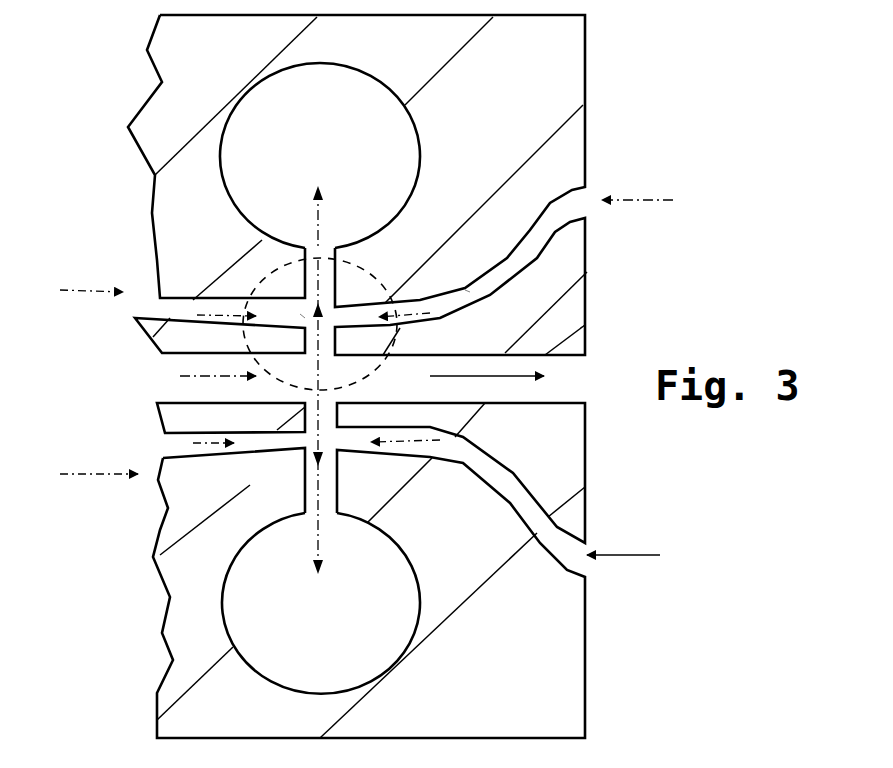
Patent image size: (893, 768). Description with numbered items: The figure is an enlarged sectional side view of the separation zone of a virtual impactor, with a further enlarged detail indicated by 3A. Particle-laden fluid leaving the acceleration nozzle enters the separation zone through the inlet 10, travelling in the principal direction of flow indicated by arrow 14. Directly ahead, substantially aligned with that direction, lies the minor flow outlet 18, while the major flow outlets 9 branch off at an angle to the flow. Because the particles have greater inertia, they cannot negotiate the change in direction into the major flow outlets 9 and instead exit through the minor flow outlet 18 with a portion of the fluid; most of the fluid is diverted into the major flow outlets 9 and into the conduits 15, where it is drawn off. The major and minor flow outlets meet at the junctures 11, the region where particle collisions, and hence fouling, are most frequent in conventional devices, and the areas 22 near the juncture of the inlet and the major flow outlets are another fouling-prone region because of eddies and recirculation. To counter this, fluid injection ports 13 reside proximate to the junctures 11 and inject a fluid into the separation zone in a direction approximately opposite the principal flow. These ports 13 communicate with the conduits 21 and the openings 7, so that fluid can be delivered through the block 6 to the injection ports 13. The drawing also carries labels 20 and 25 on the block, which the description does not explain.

The block 6 is at (483, 113).
The opening 7 is at (580, 200).
The major flow outlet 9 is at (322, 290).
The inlet 10 is at (185, 385).
The juncture 11 is at (335, 350).
The fluid injection port 13 is at (337, 316).
The arrow 14 is at (585, 325).
The conduit 15 is at (300, 119).
The minor flow outlet 18 is at (573, 383).
The side inlet channel 20 is at (172, 310).
The conduit 21 is at (467, 293).
The juncture 22 is at (305, 352).
The lip edge 25 is at (304, 316).
The mixing zone detail 3A is at (320, 324).